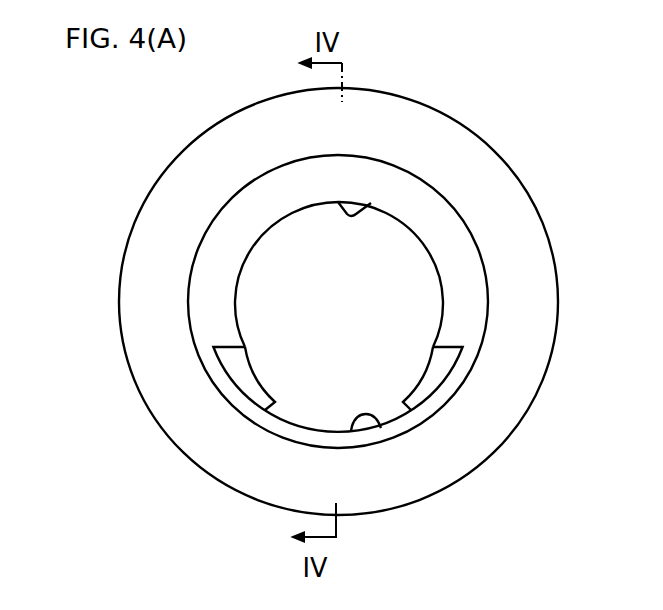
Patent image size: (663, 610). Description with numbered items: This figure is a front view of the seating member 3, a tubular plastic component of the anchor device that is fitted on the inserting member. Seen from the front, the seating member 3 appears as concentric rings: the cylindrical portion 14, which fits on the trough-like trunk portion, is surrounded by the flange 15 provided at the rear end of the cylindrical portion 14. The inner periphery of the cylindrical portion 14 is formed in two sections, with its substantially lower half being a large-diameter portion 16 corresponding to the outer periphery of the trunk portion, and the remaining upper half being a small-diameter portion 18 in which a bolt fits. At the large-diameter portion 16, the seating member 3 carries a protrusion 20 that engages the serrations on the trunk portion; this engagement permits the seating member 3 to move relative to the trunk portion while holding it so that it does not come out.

The seating member 3 is at (493, 132).
The cylindrical portion 14 is at (473, 261).
The flange 15 is at (513, 197).
The large-diameter portion 16 is at (382, 425).
The small-diameter portion 18 is at (370, 204).
The protrusion 20 is at (247, 391).